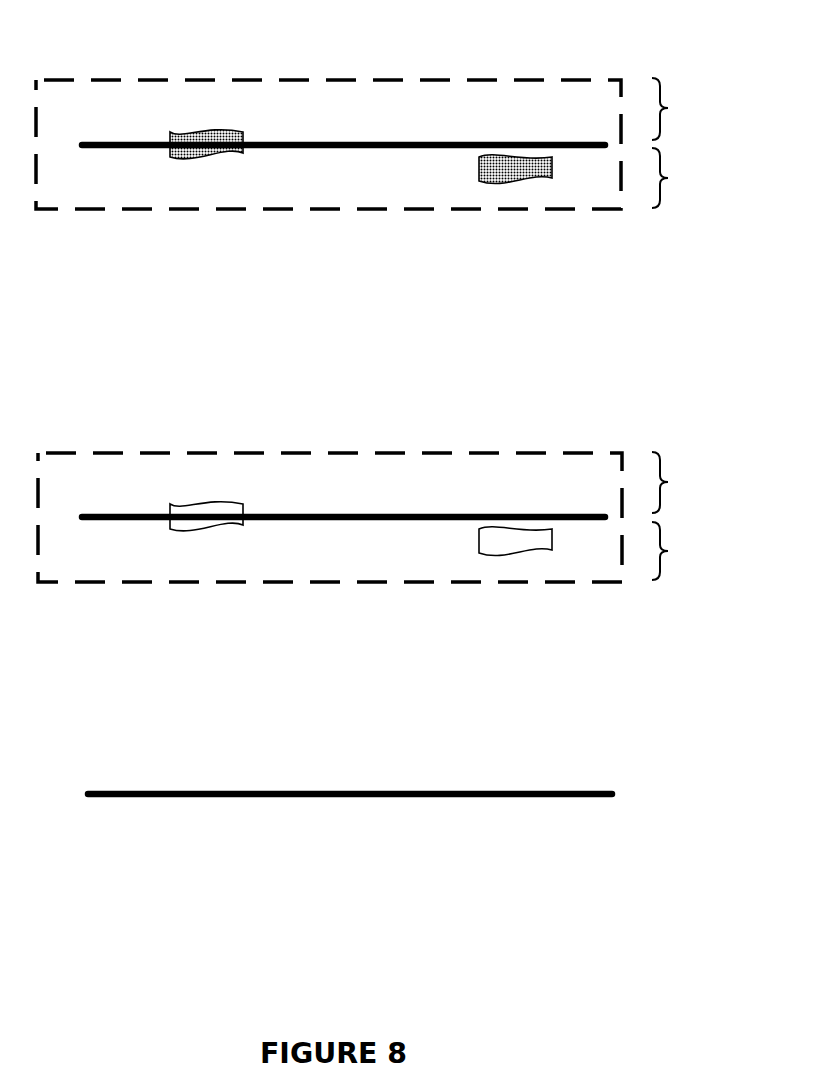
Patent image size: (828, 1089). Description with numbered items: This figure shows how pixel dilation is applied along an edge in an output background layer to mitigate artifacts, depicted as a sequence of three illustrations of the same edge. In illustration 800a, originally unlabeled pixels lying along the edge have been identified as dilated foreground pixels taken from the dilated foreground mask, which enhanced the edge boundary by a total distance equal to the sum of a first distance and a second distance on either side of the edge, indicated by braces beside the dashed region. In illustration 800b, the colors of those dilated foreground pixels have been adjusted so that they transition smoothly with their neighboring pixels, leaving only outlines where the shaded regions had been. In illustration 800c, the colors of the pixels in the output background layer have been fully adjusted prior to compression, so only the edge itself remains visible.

The illustration 800a is at (372, 40).
The illustration 800b is at (372, 382).
The illustration 800c is at (376, 736).